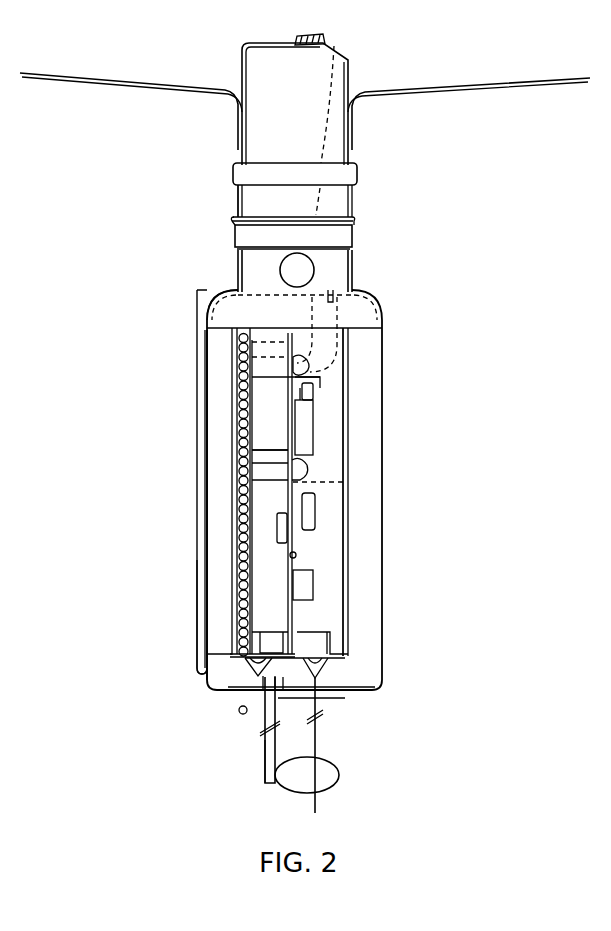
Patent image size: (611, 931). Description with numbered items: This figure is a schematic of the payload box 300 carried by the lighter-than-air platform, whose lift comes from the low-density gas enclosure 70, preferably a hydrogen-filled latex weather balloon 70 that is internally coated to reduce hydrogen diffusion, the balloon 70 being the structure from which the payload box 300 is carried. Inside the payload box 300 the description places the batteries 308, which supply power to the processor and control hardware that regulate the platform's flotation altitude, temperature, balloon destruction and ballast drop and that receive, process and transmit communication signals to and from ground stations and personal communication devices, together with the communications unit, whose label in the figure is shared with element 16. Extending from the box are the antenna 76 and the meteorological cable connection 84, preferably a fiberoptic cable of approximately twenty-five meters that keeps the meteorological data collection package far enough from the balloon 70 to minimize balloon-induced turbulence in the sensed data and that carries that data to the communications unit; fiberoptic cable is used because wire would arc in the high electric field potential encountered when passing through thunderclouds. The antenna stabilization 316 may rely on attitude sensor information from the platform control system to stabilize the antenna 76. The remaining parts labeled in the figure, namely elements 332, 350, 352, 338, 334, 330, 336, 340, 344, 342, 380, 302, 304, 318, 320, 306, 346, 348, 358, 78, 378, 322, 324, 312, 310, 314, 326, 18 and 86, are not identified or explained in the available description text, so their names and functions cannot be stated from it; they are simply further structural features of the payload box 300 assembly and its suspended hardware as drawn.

The low-density gas enclosure 70 is at (393, 97).
The cap 332 is at (243, 63).
The tab 350 is at (322, 37).
The wire 352 is at (333, 76).
The band 338 is at (240, 173).
The wall 334 is at (357, 187).
The neck 330 is at (352, 206).
The flange 336 is at (360, 223).
The rim 340 is at (233, 233).
The aperture 344 is at (280, 268).
The shoulder 342 is at (227, 296).
The strip 380 is at (197, 310).
The housing 302 is at (347, 473).
The payload box 300 is at (207, 562).
The gap 304 is at (218, 492).
The inner wall 318 is at (237, 390).
The chain of balls 320 is at (233, 527).
The module 16 is at (283, 433).
The plate 306 is at (233, 450).
The elbow conduit 346 is at (330, 355).
The connector 348 is at (323, 370).
The component 358 is at (313, 517).
The batteries 308 is at (337, 568).
The strip 78 is at (198, 580).
The lower strip 378 is at (200, 617).
The base plate 322 is at (257, 647).
The funnel 324 is at (245, 660).
The outlet funnel 312 is at (353, 668).
The bottom plate 310 is at (327, 682).
The rod connector 314 is at (258, 678).
The antenna stabilization 316 is at (315, 692).
The hole 326 is at (240, 713).
The rod 18 is at (262, 744).
The antenna 76 is at (265, 765).
The fiberoptic cable 84 is at (317, 747).
The weight 86 is at (287, 792).